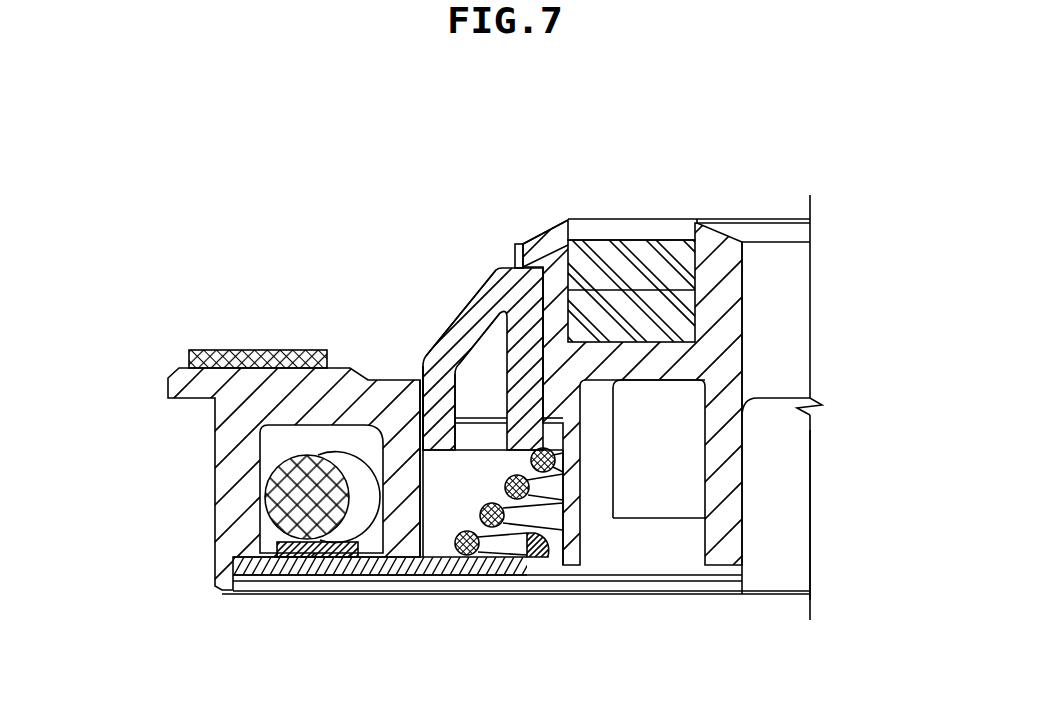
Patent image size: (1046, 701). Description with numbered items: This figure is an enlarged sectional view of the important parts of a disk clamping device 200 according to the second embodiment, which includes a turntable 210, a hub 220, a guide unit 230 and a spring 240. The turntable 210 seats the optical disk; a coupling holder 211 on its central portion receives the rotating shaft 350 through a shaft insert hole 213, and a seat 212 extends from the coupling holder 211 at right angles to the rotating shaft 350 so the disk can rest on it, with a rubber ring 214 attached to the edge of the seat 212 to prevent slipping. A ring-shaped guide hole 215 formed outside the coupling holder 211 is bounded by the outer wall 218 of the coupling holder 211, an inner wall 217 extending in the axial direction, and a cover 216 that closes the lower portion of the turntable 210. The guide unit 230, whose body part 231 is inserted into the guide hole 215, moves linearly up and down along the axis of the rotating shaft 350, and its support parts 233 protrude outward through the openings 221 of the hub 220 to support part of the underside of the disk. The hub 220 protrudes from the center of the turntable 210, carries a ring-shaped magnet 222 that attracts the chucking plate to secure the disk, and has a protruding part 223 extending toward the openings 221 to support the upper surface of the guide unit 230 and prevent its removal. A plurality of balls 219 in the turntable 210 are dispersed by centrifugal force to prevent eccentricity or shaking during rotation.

The disk clamping device 200 is at (326, 149).
The turntable 210 is at (190, 451).
The coupling holder 211 is at (650, 362).
The seat 212 is at (286, 400).
The shaft insert hole 213 is at (780, 320).
The rubber ring 214 is at (222, 349).
The guide hole 215 is at (464, 497).
The cover 216 is at (297, 566).
The inner wall 217 is at (396, 505).
The outer wall 218 is at (563, 390).
The balls 219 is at (286, 503).
The hub 220 is at (571, 203).
The openings 221 is at (506, 259).
The magnet 222 is at (650, 262).
The protruding part 223 is at (522, 251).
The guide unit 230 is at (441, 333).
The body part 231 is at (433, 416).
The support parts 233 is at (473, 308).
The spring 240 is at (520, 533).
The rotating shaft 350 is at (795, 479).